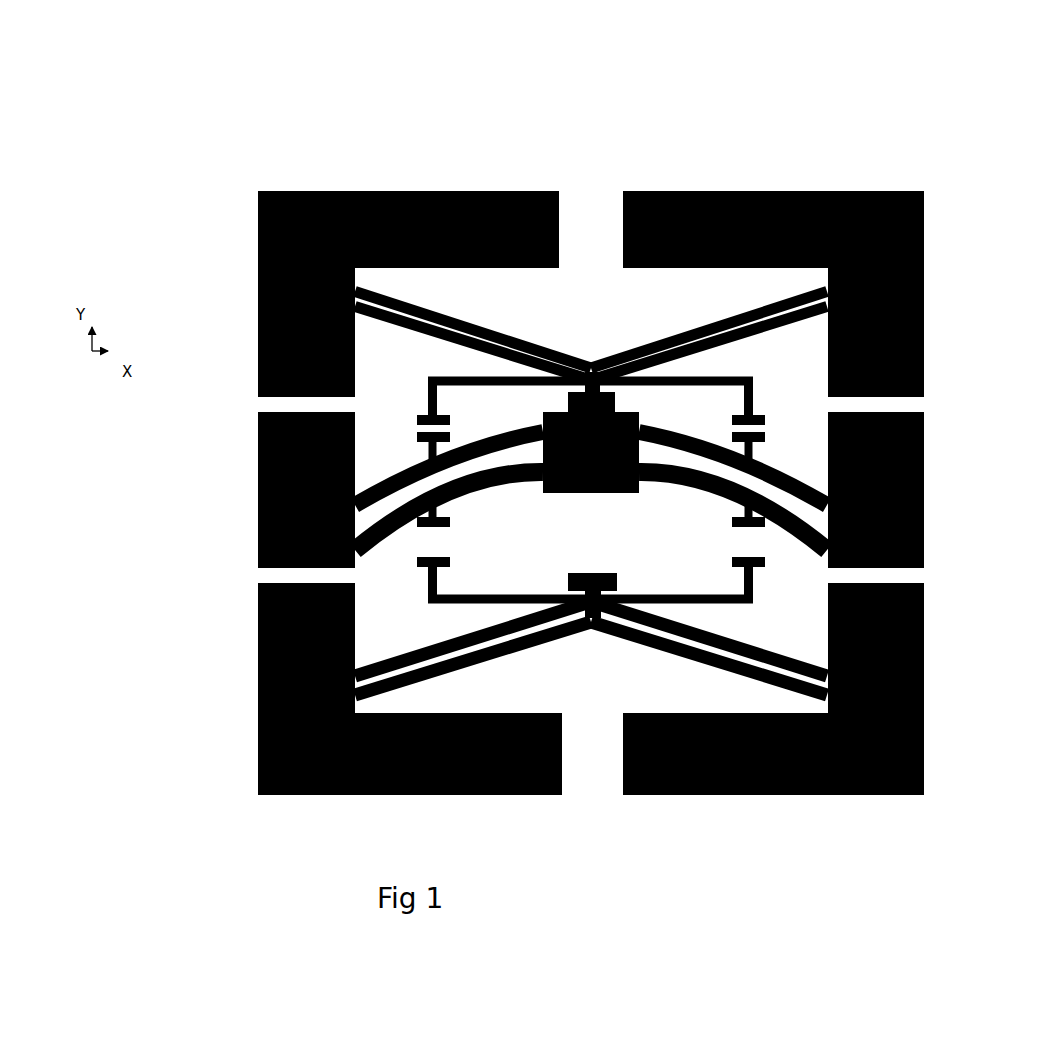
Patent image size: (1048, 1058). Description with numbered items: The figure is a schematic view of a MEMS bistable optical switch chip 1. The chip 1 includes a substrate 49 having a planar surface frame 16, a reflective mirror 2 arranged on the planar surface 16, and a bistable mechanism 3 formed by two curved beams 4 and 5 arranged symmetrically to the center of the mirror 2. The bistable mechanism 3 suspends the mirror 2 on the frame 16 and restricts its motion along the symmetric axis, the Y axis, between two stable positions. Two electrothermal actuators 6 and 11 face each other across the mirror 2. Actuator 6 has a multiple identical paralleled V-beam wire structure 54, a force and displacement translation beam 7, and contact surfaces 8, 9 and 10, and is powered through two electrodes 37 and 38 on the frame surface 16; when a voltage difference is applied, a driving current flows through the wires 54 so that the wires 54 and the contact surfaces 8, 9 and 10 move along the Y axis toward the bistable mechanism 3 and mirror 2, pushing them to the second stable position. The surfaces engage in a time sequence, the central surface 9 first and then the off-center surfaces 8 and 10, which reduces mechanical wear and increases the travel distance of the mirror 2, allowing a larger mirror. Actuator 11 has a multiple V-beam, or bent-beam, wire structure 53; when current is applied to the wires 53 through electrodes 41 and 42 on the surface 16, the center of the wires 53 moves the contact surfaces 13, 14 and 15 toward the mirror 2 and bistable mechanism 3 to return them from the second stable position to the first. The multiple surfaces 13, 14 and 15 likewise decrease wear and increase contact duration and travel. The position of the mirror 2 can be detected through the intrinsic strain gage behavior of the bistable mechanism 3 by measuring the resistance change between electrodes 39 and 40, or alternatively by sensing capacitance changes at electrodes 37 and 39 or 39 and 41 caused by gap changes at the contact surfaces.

The MEMS bistable optical switch chip 1 is at (481, 186).
The reflective mirror 2 is at (538, 495).
The bistable mechanism 3 is at (394, 466).
The curved beam 4 is at (397, 543).
The curved beam 5 is at (690, 497).
The electrothermal actuator 6 is at (479, 325).
The force and displacement translation beam 7 is at (767, 378).
The contact surface 8 is at (447, 435).
The contact surface 9 is at (581, 395).
The contact surface 10 is at (770, 437).
The electrothermal actuator 11 is at (518, 655).
The contact surface 13 is at (451, 533).
The contact surface 14 is at (592, 574).
The contact surface 15 is at (763, 533).
The planar surface frame 16 is at (378, 186).
The electrode 37 is at (254, 322).
The electrode 38 is at (927, 312).
The electrode 39 is at (253, 474).
The electrode 40 is at (947, 447).
The electrode 41 is at (252, 636).
The electrode 42 is at (930, 680).
The substrate 49 is at (594, 192).
The V-beam wire structure 53 is at (633, 648).
The V-beam wire structure 54 is at (595, 350).